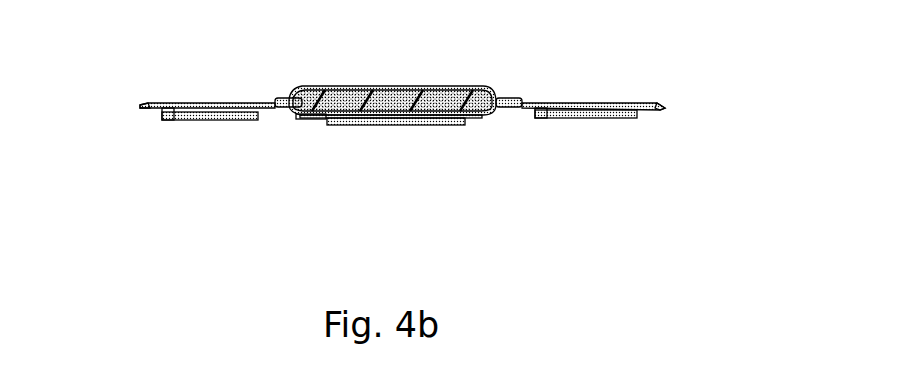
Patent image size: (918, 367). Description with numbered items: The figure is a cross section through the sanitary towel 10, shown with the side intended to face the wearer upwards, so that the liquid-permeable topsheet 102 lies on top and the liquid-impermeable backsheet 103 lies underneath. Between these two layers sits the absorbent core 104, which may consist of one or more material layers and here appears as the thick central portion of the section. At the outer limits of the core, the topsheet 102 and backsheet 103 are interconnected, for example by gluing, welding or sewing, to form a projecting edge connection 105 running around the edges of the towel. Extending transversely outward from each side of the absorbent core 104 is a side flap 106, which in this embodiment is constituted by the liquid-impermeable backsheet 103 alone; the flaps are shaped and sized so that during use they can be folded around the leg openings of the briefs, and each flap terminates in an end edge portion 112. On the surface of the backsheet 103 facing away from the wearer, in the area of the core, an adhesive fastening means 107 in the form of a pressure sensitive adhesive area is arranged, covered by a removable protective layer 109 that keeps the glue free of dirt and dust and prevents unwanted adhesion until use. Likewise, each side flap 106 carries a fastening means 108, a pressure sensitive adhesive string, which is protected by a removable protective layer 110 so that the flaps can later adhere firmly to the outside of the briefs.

The sanitary towel 10 is at (655, 82).
The liquid-permeable topsheet 102 is at (360, 88).
The liquid-impermeable backsheet 103 is at (480, 115).
The absorbent core 104 is at (455, 85).
The projecting edge connection 105 is at (287, 100).
The side flaps 106 is at (170, 105).
The adhesive fastening means 107 is at (320, 118).
The fastening means 108 is at (157, 117).
The protective layer 109 is at (378, 125).
The protective layers 110 is at (220, 117).
The end edge portion 112 is at (128, 108).